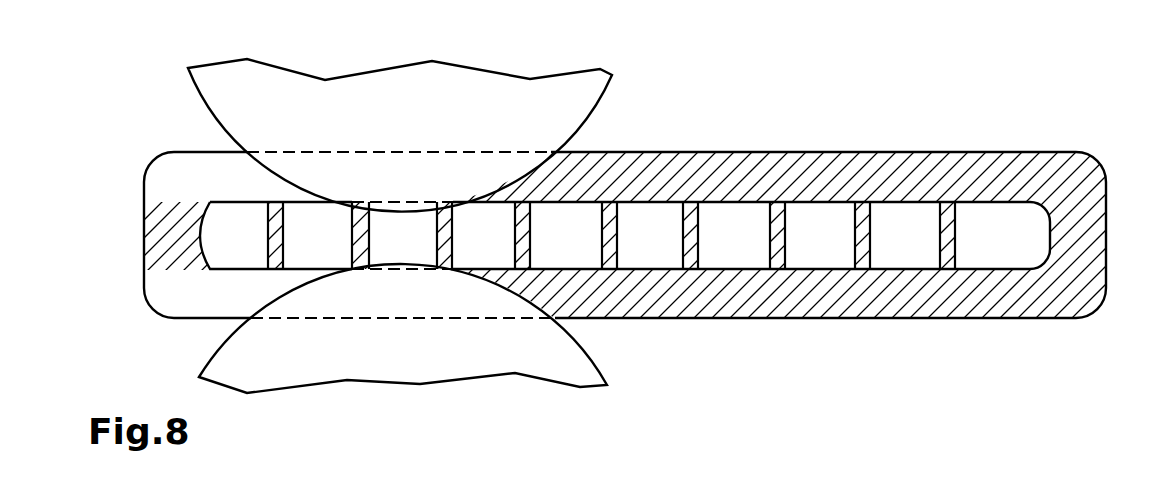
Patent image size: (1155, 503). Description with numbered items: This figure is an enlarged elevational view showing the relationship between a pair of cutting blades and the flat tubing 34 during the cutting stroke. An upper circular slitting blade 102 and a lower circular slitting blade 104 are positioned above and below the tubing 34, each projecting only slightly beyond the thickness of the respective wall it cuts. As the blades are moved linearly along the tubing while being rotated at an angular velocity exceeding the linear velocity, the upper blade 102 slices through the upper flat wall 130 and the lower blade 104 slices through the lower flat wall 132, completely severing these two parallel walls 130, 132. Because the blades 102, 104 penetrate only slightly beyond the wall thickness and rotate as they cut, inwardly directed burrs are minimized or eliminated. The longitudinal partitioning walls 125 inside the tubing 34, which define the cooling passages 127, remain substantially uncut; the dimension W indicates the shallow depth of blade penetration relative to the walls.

The tubing 34 is at (577, 231).
The upper circular slitting blade 102 is at (462, 113).
The lower circular slitting blade 104 is at (465, 358).
The longitudinal partitioning wall 125 is at (370, 240).
The cooling passage 127 is at (573, 235).
The upper flat wall 130 is at (808, 151).
The lower flat wall 132 is at (793, 320).
The width / gap dimension W is at (322, 142).